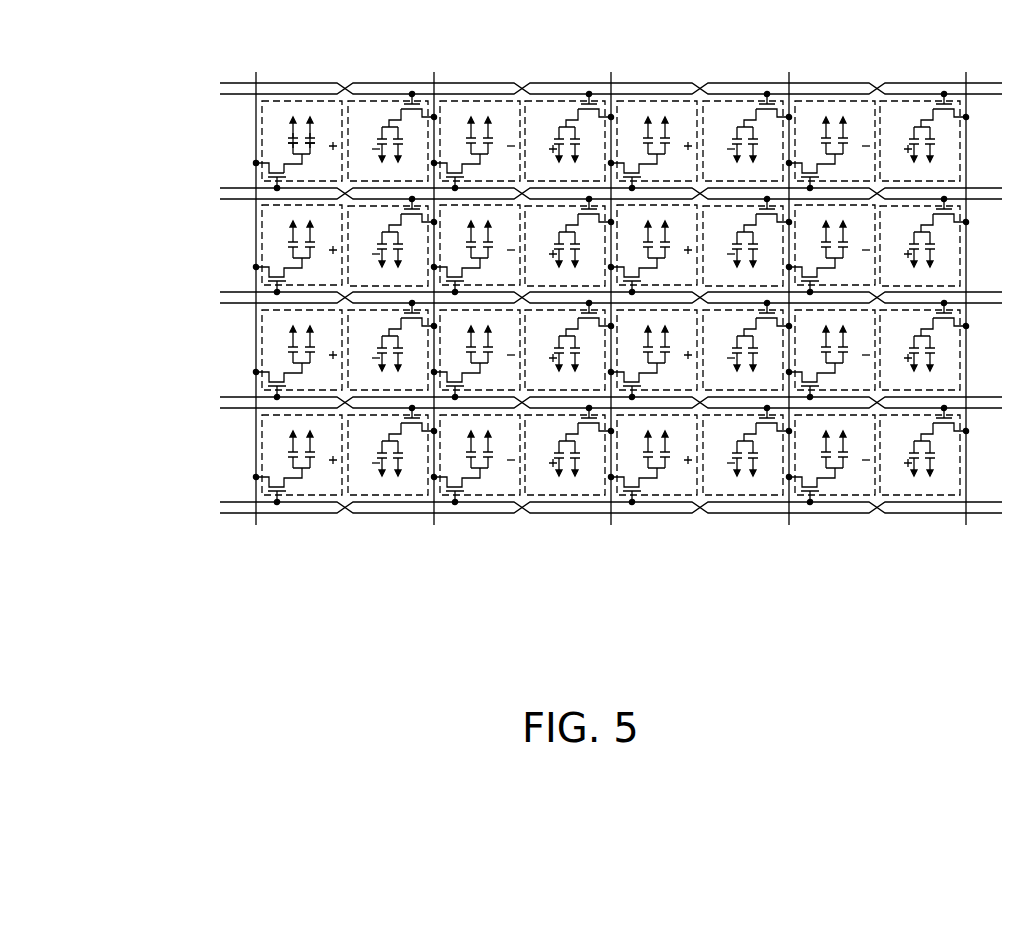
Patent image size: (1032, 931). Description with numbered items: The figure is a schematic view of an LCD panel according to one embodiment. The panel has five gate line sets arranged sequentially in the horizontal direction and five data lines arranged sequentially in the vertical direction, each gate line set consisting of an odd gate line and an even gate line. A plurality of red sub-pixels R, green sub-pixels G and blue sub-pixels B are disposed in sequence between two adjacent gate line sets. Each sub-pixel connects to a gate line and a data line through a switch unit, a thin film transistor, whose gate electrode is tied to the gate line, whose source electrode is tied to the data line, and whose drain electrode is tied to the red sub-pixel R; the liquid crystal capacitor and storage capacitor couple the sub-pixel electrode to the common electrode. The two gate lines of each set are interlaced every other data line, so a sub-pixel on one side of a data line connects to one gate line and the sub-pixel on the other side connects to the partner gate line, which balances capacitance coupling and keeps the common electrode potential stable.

The red sub-pixel R is at (335, 122).
The green sub-pixel G is at (368, 102).
The blue sub-pixel B is at (506, 120).